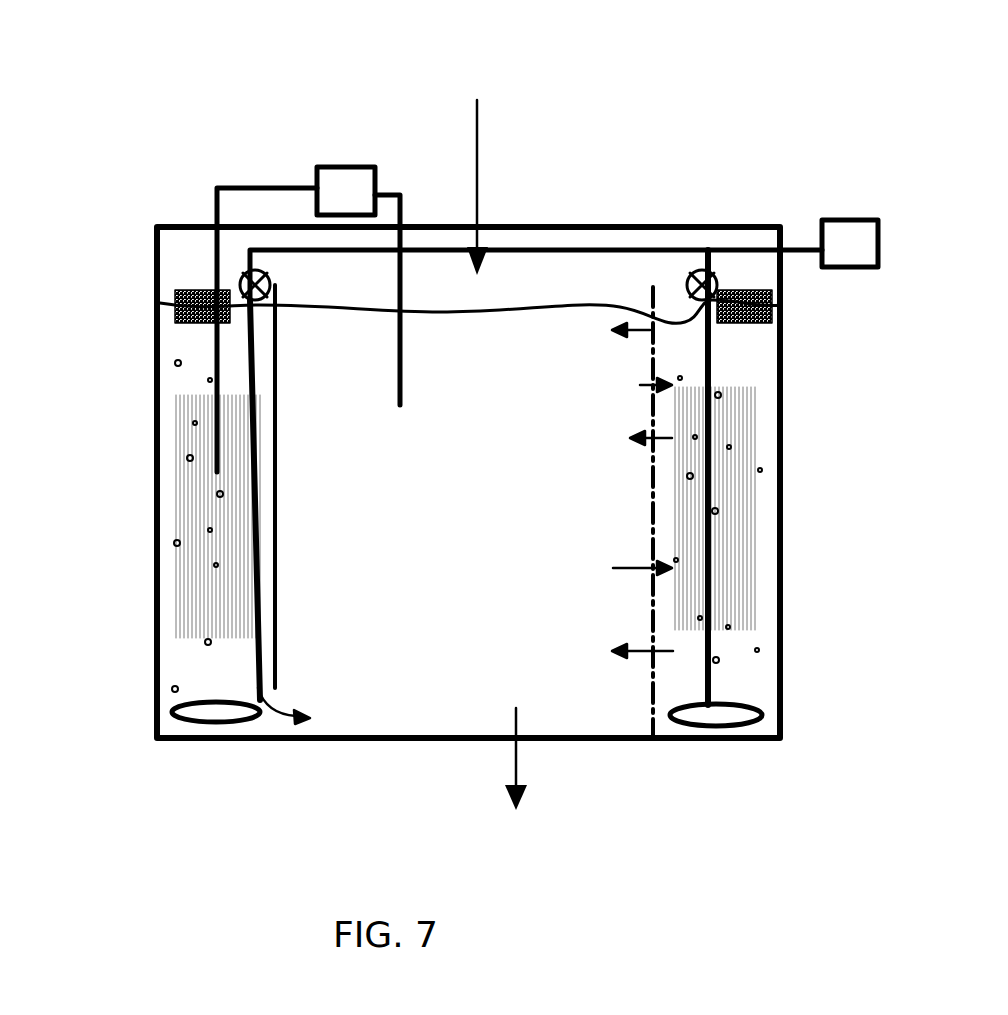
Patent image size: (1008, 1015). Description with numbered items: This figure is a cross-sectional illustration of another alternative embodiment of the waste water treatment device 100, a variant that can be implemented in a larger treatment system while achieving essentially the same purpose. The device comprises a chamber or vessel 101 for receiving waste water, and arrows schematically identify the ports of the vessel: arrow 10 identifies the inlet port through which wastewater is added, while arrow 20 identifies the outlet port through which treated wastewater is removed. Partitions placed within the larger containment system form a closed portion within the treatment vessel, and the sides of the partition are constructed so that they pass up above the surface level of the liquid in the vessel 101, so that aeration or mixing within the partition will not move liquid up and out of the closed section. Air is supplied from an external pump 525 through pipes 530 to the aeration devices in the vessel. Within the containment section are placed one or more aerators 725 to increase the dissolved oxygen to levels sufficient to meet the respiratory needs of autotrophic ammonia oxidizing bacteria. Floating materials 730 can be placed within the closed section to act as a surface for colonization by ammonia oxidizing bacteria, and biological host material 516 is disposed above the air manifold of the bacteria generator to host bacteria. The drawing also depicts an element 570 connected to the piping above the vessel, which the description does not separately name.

The waste water treatment device 100 is at (245, 127).
The inlet port 10 is at (475, 148).
The outlet port 20 is at (512, 786).
The vessel 101 is at (467, 540).
The biological host material 516 is at (260, 517).
The external pump 525 is at (850, 220).
The pipes 530 is at (603, 257).
The sensor unit 570 is at (345, 167).
The aerators 725 is at (366, 332).
The floating materials 730 is at (175, 307).